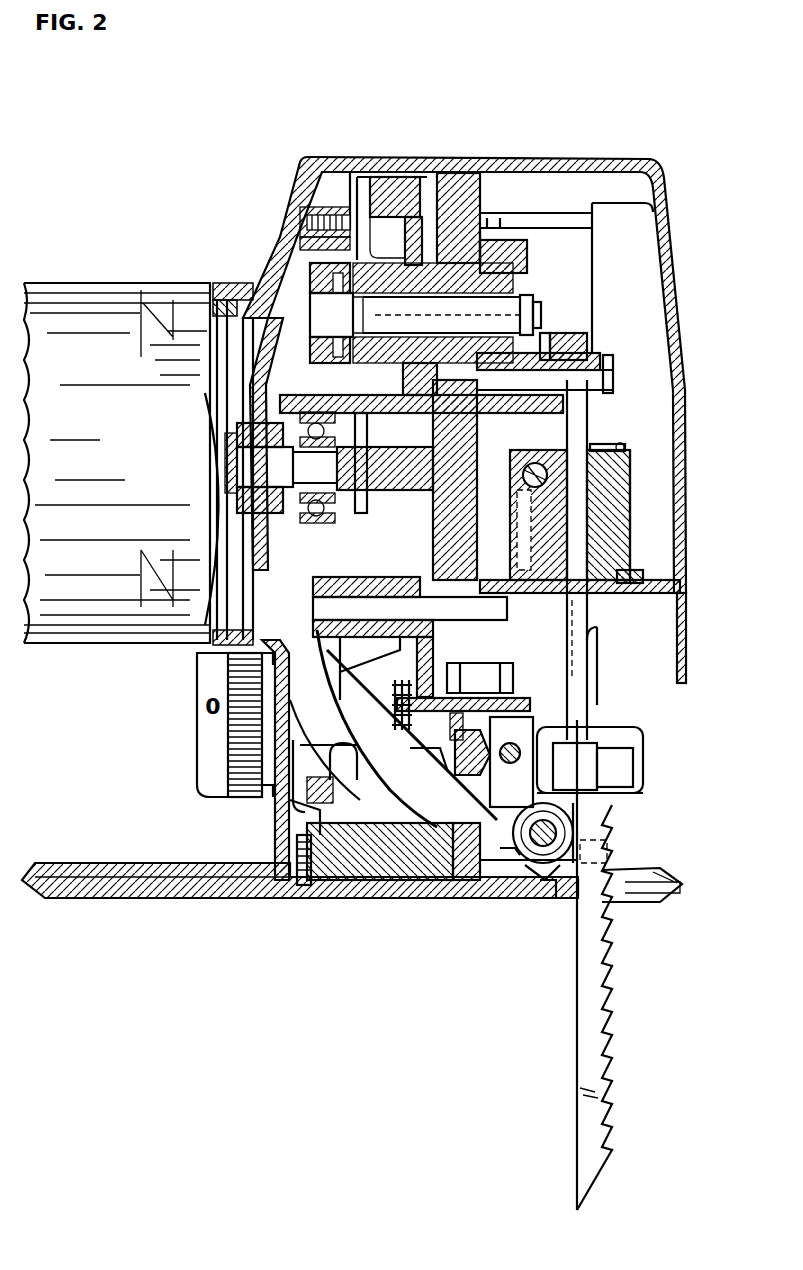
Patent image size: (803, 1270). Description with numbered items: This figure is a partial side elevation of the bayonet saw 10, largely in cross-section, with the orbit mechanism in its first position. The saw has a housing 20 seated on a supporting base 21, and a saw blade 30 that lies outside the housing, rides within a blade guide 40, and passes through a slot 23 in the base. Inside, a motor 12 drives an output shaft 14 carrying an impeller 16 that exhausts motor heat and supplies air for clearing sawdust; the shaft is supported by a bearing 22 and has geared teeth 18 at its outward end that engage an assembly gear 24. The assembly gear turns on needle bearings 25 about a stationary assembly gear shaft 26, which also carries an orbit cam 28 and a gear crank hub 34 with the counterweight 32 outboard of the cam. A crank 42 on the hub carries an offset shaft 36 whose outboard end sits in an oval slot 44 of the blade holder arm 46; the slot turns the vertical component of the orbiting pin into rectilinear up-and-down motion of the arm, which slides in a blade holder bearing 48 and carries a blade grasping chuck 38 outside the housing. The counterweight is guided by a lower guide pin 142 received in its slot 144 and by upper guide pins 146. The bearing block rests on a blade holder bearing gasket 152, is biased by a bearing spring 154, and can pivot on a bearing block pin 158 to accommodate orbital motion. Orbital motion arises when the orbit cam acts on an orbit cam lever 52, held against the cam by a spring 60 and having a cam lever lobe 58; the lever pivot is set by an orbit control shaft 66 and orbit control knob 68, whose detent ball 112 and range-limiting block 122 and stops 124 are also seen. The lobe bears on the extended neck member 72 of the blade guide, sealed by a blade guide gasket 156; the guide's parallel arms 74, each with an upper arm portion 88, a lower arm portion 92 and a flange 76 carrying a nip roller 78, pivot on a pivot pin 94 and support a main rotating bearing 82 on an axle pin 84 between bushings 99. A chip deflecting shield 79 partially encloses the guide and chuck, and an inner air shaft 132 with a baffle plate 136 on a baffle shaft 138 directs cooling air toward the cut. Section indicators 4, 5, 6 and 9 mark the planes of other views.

The section line 4- 4 is at (655, 150).
The section line 5- 5 is at (538, 150).
The section line 6- 6 is at (437, 150).
The section line 9- 9 is at (192, 625).
The bayonet saw 10 is at (222, 187).
The motor 12 is at (213, 460).
The output shaft 14 is at (318, 467).
The impeller 16 is at (280, 343).
The geared teeth 18 is at (357, 500).
The housing 20 is at (675, 262).
The supporting base 21 is at (80, 875).
The bearing 22 is at (305, 432).
The slot 23 is at (665, 893).
The assembly gear 24 is at (389, 185).
The needle bearings 25 is at (484, 290).
The assembly gear shaft 26 is at (535, 318).
The orbit cam 28 is at (427, 223).
The saw blade 30 is at (577, 1066).
The counterweight 32 is at (463, 188).
The gear crank hub 34 is at (473, 235).
The offset shaft 36 is at (613, 383).
The blade grasping chuck 38 is at (615, 770).
The blade guide 40 is at (653, 806).
The crank 42 is at (510, 245).
The oval slot 44 is at (583, 350).
The blade holder arm 46 is at (575, 612).
The blade holder bearing 48 is at (615, 535).
The orbit cam lever 52 is at (428, 733).
The cam lever lobe 58 is at (345, 760).
The spring 60 is at (398, 690).
The orbit control shaft 66 is at (380, 713).
The orbit control knob 68 is at (210, 720).
The extended neck member 72 is at (380, 693).
The parallel arms 74 is at (505, 855).
The flange 76 is at (575, 810).
The nip roller 78 is at (607, 860).
The chip deflecting shield 79 is at (686, 662).
The main rotating bearing 82 is at (537, 862).
The axle pin 84 is at (550, 850).
The upper arm portion 88 is at (520, 725).
The lower arm portion 92 is at (517, 862).
The pivot pin 94 is at (520, 757).
The bushings 99 is at (556, 833).
The ball 112 is at (225, 673).
The block 122 is at (293, 815).
The stops 124 is at (265, 718).
The inner air shaft 132 is at (430, 822).
The baffle plate 136 is at (355, 838).
The baffle shaft 138 is at (292, 830).
The counterweight lower guide pin 142 is at (385, 610).
The slot 144 is at (445, 562).
The upper guide pins 146 is at (557, 228).
The blade holder bearing gasket 152 is at (640, 577).
The bearing spring 154 is at (612, 452).
The blade guide gasket 156 is at (452, 683).
The bearing block pin 158 is at (535, 470).